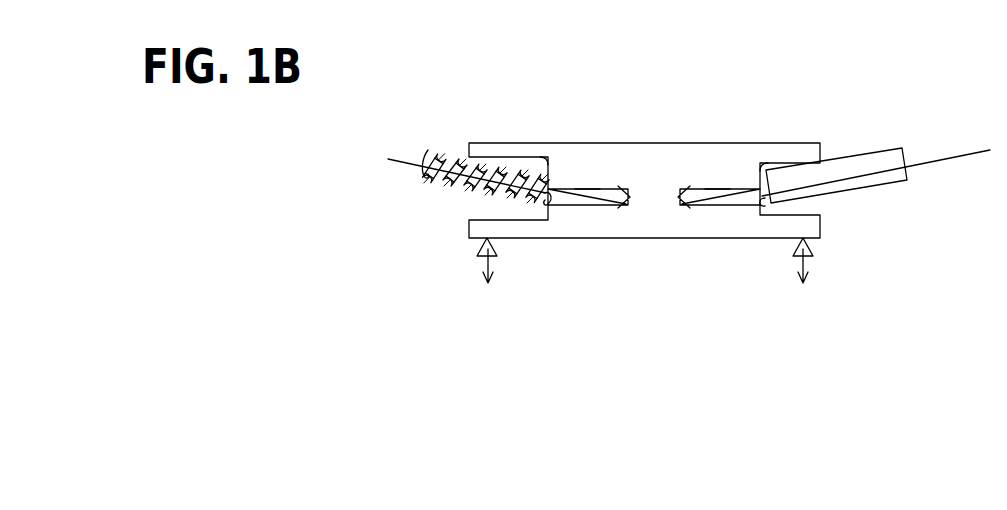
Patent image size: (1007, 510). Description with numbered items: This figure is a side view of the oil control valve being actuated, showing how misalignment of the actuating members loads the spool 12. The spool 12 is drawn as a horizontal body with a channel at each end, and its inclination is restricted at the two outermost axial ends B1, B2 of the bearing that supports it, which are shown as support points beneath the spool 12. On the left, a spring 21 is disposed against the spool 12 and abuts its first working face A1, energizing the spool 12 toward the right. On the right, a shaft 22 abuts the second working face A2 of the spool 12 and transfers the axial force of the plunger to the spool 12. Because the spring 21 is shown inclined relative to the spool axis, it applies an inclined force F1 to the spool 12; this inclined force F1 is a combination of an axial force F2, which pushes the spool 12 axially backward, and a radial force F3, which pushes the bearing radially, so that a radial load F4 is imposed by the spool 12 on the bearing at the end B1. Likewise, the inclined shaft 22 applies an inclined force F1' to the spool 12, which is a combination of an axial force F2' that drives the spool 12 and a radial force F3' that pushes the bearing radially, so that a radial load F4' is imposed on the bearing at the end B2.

The spool 12 is at (647, 150).
The spring 21 is at (461, 157).
The shaft 22 is at (870, 156).
The first working face A1 is at (543, 162).
The second working face A2 is at (763, 166).
The axial end of the bearing B1 is at (487, 238).
The axial end of the bearing B2 is at (805, 240).
The inclined force F1 is at (593, 244).
The inclined force F1' is at (713, 244).
The axial force F2 is at (581, 131).
The axial force F2' is at (717, 132).
The radial force F3 is at (563, 247).
The radial force F3' is at (752, 250).
The radial load F4 is at (486, 283).
The radial load F4' is at (803, 283).